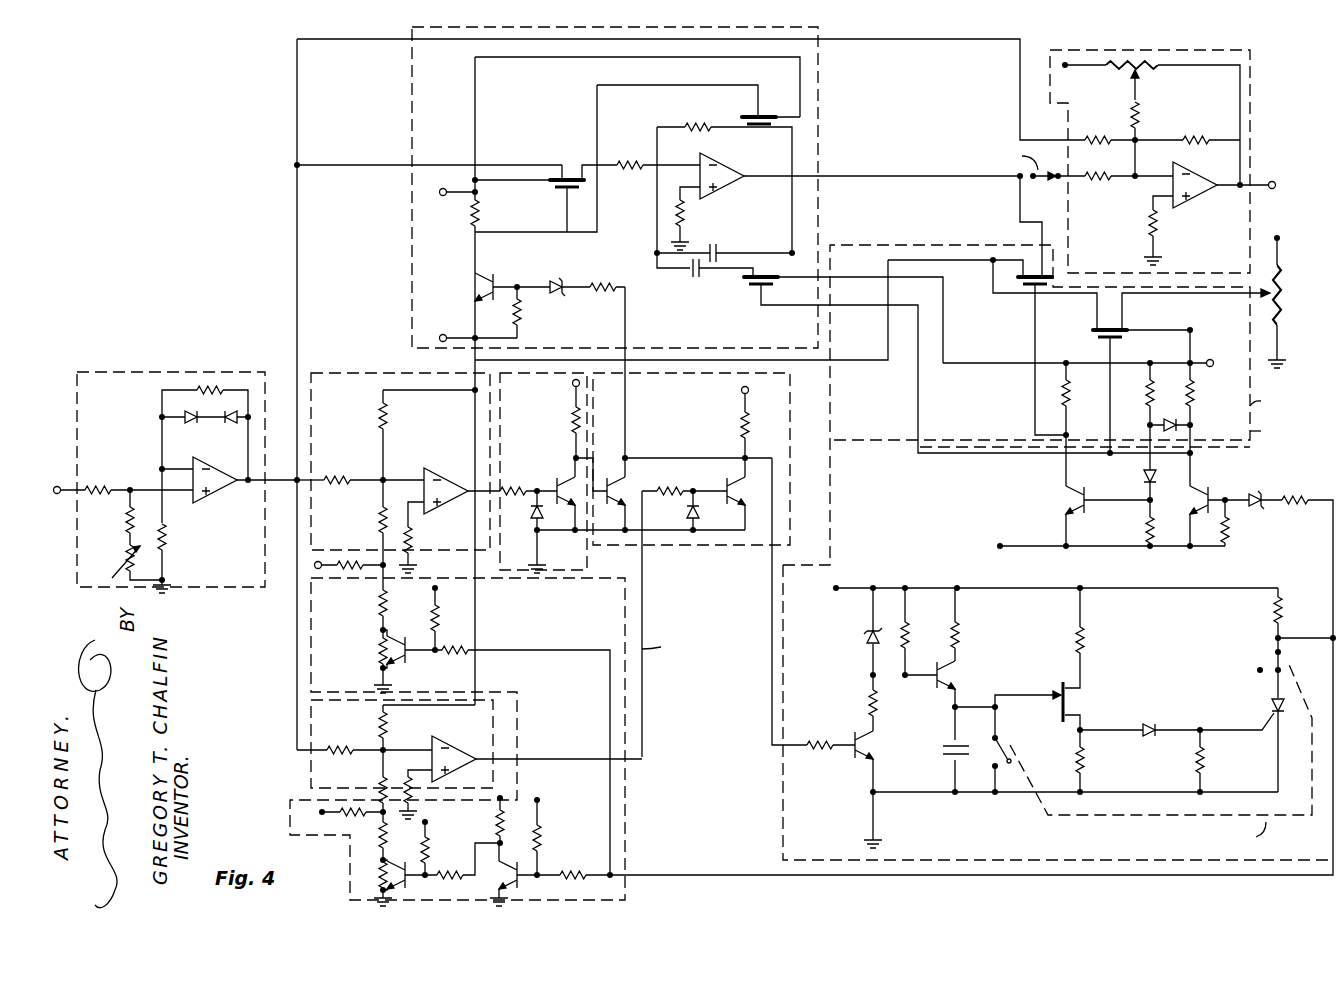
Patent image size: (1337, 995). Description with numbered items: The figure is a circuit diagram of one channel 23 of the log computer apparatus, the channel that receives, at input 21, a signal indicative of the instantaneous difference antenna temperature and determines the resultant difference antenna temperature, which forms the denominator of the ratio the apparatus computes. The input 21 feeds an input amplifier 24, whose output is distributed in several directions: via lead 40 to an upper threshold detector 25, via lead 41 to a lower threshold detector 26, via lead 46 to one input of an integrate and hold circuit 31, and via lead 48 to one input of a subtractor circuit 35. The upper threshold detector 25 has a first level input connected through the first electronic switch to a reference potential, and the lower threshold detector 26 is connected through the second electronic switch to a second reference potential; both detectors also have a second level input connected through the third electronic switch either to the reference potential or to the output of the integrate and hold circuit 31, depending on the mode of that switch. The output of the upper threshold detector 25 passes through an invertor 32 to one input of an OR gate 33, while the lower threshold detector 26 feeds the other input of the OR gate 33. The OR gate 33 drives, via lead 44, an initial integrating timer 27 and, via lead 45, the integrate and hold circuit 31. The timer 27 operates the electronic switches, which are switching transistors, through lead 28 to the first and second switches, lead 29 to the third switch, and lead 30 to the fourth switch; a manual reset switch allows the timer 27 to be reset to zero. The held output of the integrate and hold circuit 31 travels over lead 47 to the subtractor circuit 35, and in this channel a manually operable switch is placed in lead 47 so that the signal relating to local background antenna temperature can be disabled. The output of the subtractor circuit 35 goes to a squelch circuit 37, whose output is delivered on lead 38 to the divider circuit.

The second input 21 is at (58, 486).
The channel 23 is at (258, 207).
The input amplifier 24 is at (170, 372).
The upper threshold detector 25 is at (352, 373).
The lower threshold detector 26 is at (313, 726).
The initial integrating timer 27 is at (783, 787).
The lead 28 is at (644, 874).
The lead 29 is at (1062, 470).
The lead 30 is at (1195, 478).
The integrate and hold circuit 31 is at (412, 127).
The invertor 32 is at (587, 565).
The OR gate 33 is at (693, 548).
The subtractor circuit 35 is at (1250, 88).
The squelch circuit 37 is at (1252, 90).
The lead 38 is at (1272, 181).
The lead 40 is at (316, 480).
The lead 41 is at (297, 648).
The lead 44 is at (783, 673).
The lead 45 is at (627, 410).
The lead 46 is at (338, 168).
The lead 47 is at (893, 170).
The lead 48 is at (297, 91).